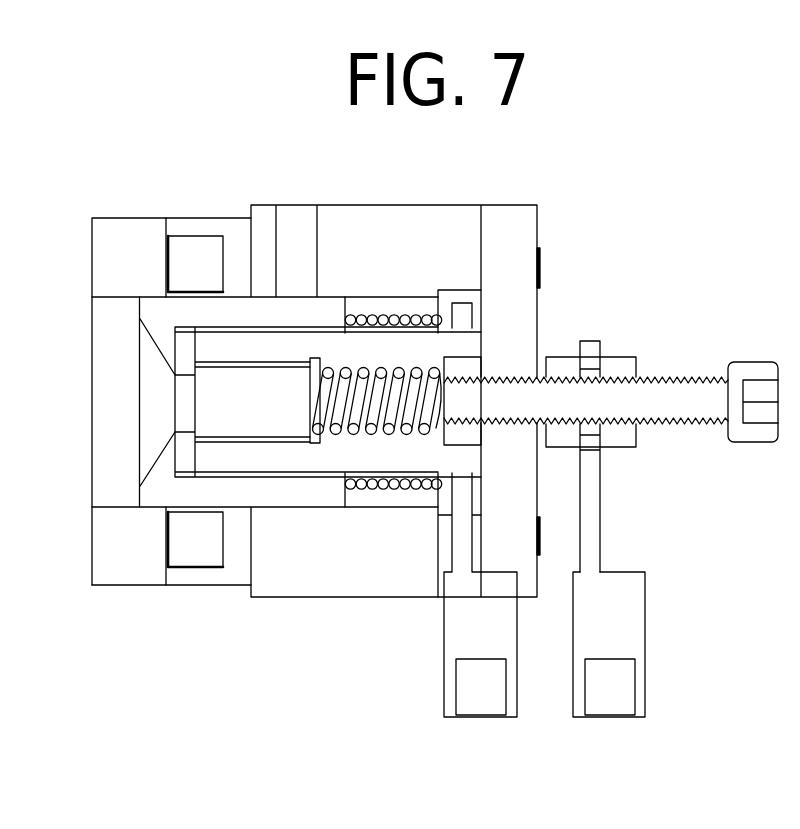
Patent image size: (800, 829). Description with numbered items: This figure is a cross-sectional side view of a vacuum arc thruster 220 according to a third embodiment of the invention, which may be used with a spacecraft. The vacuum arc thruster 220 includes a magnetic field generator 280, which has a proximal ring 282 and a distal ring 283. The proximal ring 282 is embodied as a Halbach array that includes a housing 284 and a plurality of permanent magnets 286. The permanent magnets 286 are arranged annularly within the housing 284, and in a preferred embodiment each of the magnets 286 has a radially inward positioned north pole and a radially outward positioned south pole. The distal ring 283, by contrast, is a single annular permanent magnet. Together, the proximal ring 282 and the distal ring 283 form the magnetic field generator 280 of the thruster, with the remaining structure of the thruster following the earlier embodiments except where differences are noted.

The vacuum arc thruster 220 is at (601, 236).
The distal ring 283 is at (118, 237).
The housing 284 is at (183, 228).
The permanent magnets 286 is at (205, 250).
The magnetic field generator 280 is at (163, 613).
The proximal ring 282 is at (192, 613).